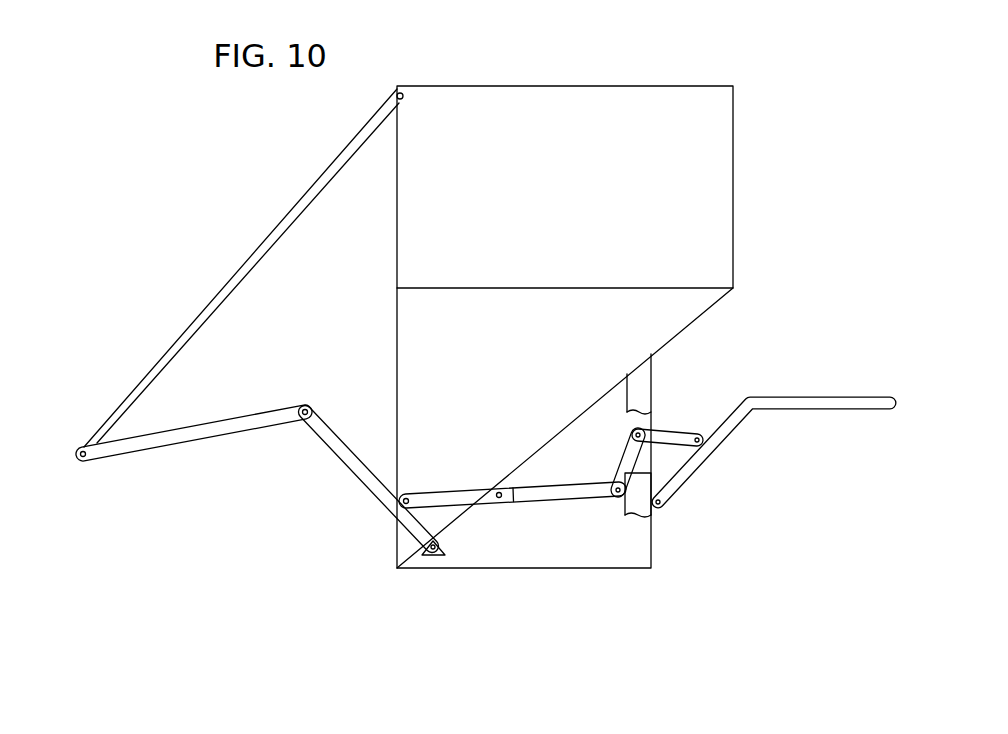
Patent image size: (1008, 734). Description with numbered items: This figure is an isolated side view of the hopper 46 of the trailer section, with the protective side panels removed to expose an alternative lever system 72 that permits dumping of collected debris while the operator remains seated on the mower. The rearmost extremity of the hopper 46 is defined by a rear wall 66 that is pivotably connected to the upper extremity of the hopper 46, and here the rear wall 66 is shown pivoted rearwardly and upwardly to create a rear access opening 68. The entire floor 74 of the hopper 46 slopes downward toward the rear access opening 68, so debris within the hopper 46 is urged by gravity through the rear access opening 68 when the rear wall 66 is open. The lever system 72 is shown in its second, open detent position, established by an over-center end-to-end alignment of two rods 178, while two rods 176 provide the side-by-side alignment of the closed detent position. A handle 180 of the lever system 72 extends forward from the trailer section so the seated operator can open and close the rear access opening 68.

The hopper 46 is at (723, 158).
The rear wall 66 is at (302, 196).
The rear access opening 68 is at (350, 327).
The lever system 72 is at (703, 518).
The floor 74 is at (668, 341).
The rods 176 is at (323, 432).
The rods 178 is at (533, 492).
The handle 180 is at (817, 403).